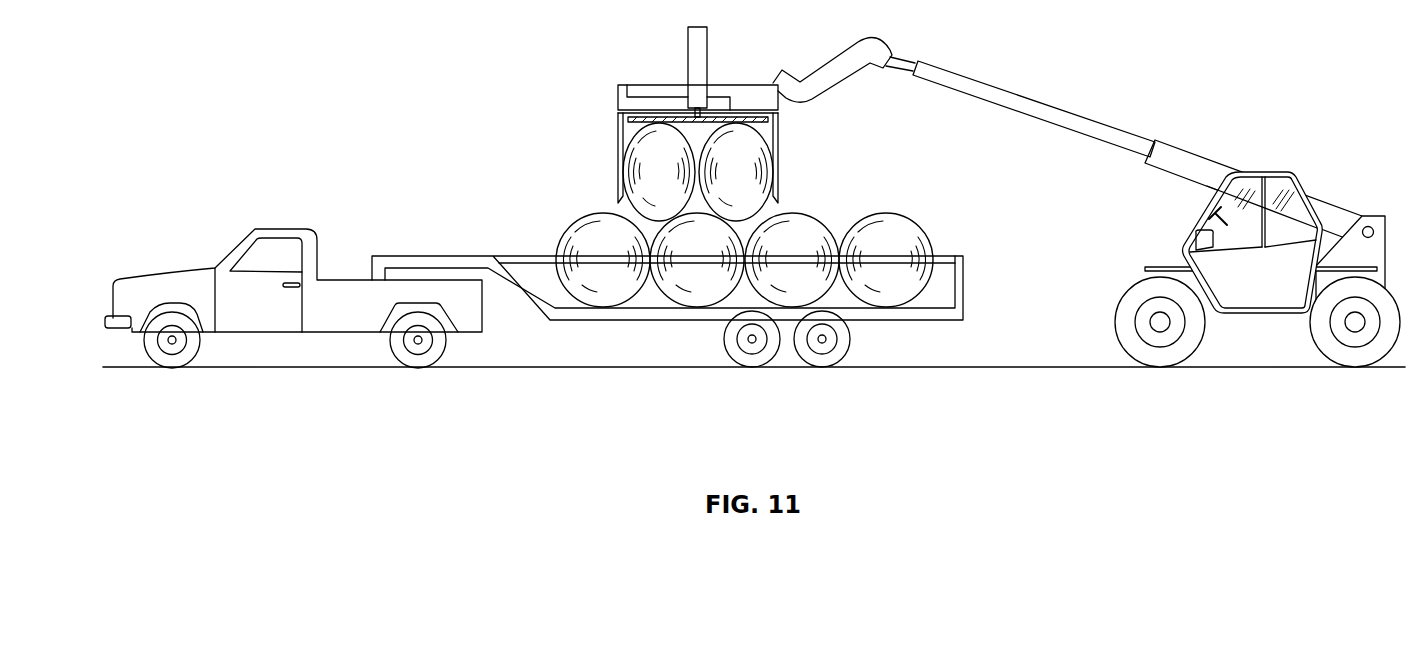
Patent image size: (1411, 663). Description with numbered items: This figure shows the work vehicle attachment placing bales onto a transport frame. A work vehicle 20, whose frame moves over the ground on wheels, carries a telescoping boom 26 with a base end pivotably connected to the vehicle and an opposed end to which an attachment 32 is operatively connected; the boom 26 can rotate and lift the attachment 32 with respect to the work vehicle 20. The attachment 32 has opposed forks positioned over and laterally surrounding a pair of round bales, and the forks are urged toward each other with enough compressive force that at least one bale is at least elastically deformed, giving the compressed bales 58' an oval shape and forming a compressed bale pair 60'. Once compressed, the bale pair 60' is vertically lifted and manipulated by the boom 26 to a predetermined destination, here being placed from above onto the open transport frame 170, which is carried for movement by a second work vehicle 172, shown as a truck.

The work vehicle 20 is at (1213, 128).
The boom 26 is at (1035, 102).
The attachment 32 is at (766, 38).
The deformed or compressed bale 58' is at (687, 166).
The deformed or compressed pair of bales 60' is at (716, 166).
The transport frame 170 is at (917, 322).
The work vehicle 172 is at (283, 228).